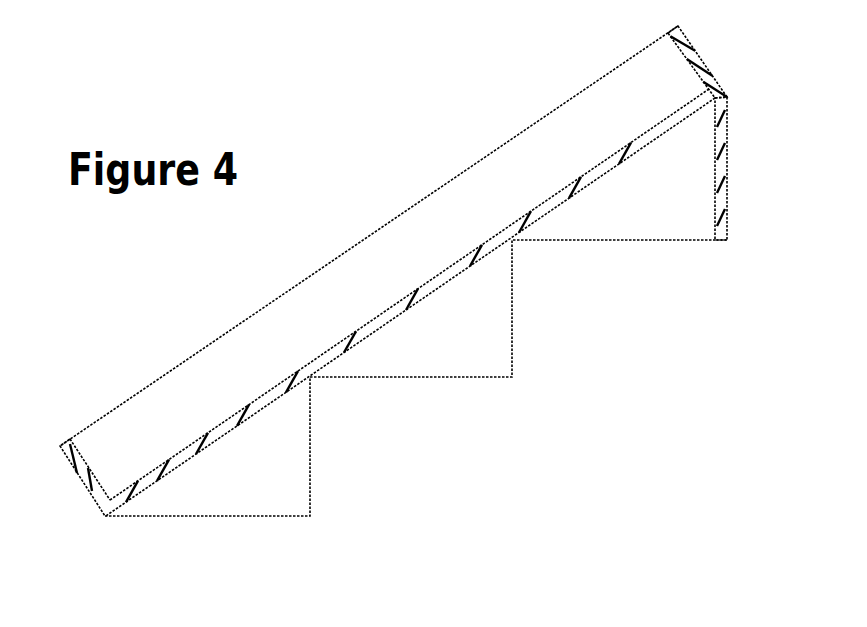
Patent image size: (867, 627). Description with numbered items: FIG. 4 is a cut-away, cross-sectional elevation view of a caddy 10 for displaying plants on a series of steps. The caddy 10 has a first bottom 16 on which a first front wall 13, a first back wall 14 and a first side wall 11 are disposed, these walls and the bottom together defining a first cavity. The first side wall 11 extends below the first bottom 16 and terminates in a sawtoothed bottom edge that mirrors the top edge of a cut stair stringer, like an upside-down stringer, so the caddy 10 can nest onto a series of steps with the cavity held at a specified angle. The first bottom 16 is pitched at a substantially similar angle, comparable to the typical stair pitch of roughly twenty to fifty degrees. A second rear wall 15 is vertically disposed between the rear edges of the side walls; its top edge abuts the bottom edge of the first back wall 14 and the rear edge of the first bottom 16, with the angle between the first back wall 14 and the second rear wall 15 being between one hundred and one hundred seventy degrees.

The caddy 10 is at (417, 302).
The first side wall 11 is at (435, 347).
The first front wall 13 is at (77, 473).
The first back wall 14 is at (697, 50).
The second rear wall 15 is at (728, 160).
The first bottom 16 is at (553, 212).